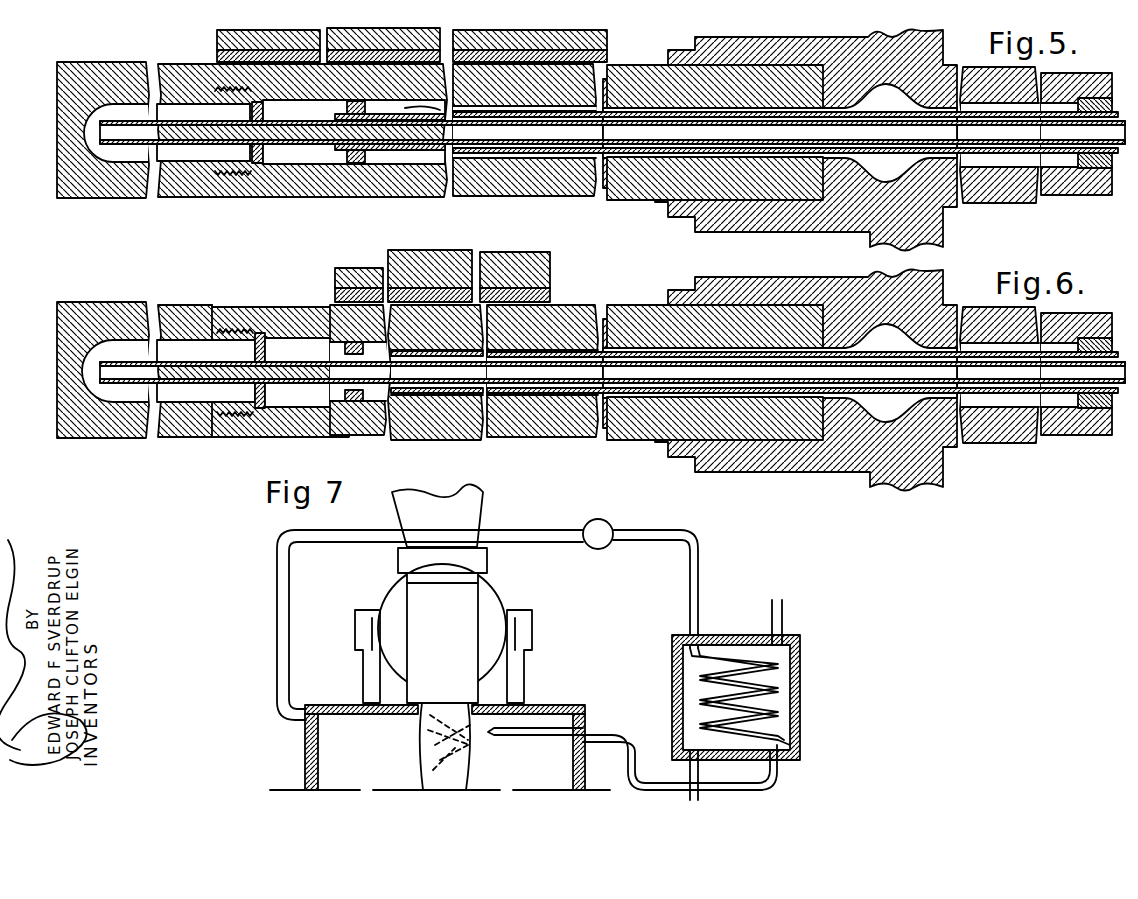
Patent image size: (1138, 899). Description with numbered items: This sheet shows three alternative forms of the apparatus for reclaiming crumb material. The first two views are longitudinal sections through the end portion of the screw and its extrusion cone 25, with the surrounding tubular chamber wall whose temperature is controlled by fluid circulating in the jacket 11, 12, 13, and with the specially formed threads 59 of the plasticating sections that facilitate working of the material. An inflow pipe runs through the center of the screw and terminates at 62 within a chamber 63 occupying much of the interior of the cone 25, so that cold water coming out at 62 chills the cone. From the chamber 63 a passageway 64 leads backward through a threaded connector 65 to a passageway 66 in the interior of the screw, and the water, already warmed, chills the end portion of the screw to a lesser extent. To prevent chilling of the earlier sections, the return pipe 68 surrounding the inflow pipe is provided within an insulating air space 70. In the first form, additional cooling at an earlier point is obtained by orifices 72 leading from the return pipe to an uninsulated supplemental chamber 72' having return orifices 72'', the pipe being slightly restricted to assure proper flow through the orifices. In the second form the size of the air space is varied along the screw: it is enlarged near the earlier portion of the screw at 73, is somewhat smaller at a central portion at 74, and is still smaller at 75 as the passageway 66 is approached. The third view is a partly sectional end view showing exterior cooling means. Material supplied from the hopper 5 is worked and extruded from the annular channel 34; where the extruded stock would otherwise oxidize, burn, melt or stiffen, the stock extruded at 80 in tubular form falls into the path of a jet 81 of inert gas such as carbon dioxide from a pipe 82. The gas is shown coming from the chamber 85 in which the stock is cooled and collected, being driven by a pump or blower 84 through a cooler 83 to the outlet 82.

In FIG. 5, the cone 25 is at (82, 75).
In FIG. 6, the cone 25 is at (96, 310).
In FIG. 5, the inflow pipe termination 62 is at (98, 126).
In FIG. 6, the inflow pipe termination 62 is at (100, 366).
In FIG. 5, the chamber 63 is at (203, 131).
In FIG. 6, the chamber 63 is at (175, 350).
In FIG. 5, the passageway 64 is at (227, 150).
In FIG. 6, the passageway 64 is at (218, 388).
In FIG. 5, the threaded connector 65 is at (240, 176).
In FIG. 6, the threaded connector 65 is at (245, 418).
In FIG. 5, the passageway 66 is at (298, 153).
In FIG. 6, the passageway 66 is at (297, 395).
In FIG. 5, the orifices 72 is at (343, 161).
In FIG. 5, the supplemental chamber 72' is at (390, 167).
In FIG. 5, the return orifices 72'' is at (421, 122).
In FIG. 5, the jacket 11 is at (359, 20).
In FIG. 6, the jacket 11 is at (366, 262).
In FIG. 5, the jacket 12 is at (463, 20).
In FIG. 6, the jacket 12 is at (464, 252).
In FIG. 5, the jacket 13 is at (558, 27).
In FIG. 6, the jacket 13 is at (548, 262).
In FIG. 5, the specially formed threads 59 is at (522, 196).
In FIG. 6, the specially formed threads 59 is at (468, 245).
In FIG. 5, the return pipe 68 is at (500, 154).
In FIG. 5, the insulating air space 70 is at (626, 110).
In FIG. 6, the insulating air space 70 is at (557, 342).
In FIG. 6, the enlarged air space portion 73 is at (628, 342).
In FIG. 6, the central air space portion 74 is at (447, 358).
In FIG. 6, the reduced air space portion 75 is at (405, 352).
In FIG. 7, the hopper 5 is at (468, 518).
In FIG. 7, the annular channel 34 is at (470, 690).
In FIG. 7, the extruded stock 80 is at (458, 778).
In FIG. 7, the jet 81 is at (466, 742).
In FIG. 7, the pipe 82 is at (560, 740).
In FIG. 7, the cooler 83 is at (788, 673).
In FIG. 7, the pump or blower 84 is at (606, 524).
In FIG. 7, the chamber 85 is at (312, 750).